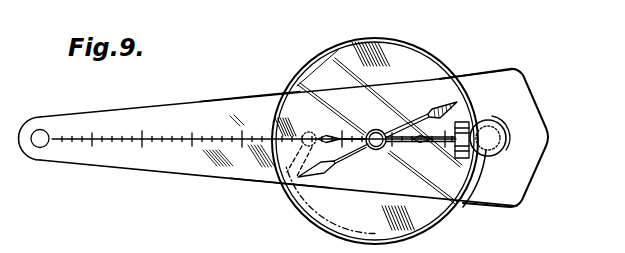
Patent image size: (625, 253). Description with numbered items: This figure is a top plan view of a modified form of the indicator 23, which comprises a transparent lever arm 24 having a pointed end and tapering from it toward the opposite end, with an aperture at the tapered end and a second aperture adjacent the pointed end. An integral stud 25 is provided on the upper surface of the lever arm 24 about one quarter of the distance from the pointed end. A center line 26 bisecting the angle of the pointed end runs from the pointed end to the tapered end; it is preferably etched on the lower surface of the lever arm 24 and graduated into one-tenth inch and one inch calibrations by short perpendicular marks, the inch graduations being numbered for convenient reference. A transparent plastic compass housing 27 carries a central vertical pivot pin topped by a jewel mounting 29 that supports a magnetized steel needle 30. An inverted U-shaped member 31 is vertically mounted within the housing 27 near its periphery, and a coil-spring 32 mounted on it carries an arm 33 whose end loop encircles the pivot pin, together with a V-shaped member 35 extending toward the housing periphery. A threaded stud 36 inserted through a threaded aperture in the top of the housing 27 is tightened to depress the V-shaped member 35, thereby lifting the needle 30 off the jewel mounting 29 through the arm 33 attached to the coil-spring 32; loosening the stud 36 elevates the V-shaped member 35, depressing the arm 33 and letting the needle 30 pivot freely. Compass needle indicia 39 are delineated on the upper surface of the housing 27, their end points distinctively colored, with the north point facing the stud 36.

The indicator 23 is at (250, 96).
The transparent lever arm 24 is at (220, 108).
The integral stud 25 is at (280, 184).
The center line 26 is at (187, 142).
The compass housing 27 is at (432, 57).
The jewel mounting 29 is at (380, 151).
The magnetized steel needle 30 is at (355, 153).
The inverted U-shaped member 31 is at (487, 120).
The coil-spring 32 is at (473, 118).
The arm 33 is at (423, 145).
The V-shaped member 35 is at (484, 176).
The threaded stud 36 is at (505, 153).
The compass needle indicia 39 is at (366, 133).